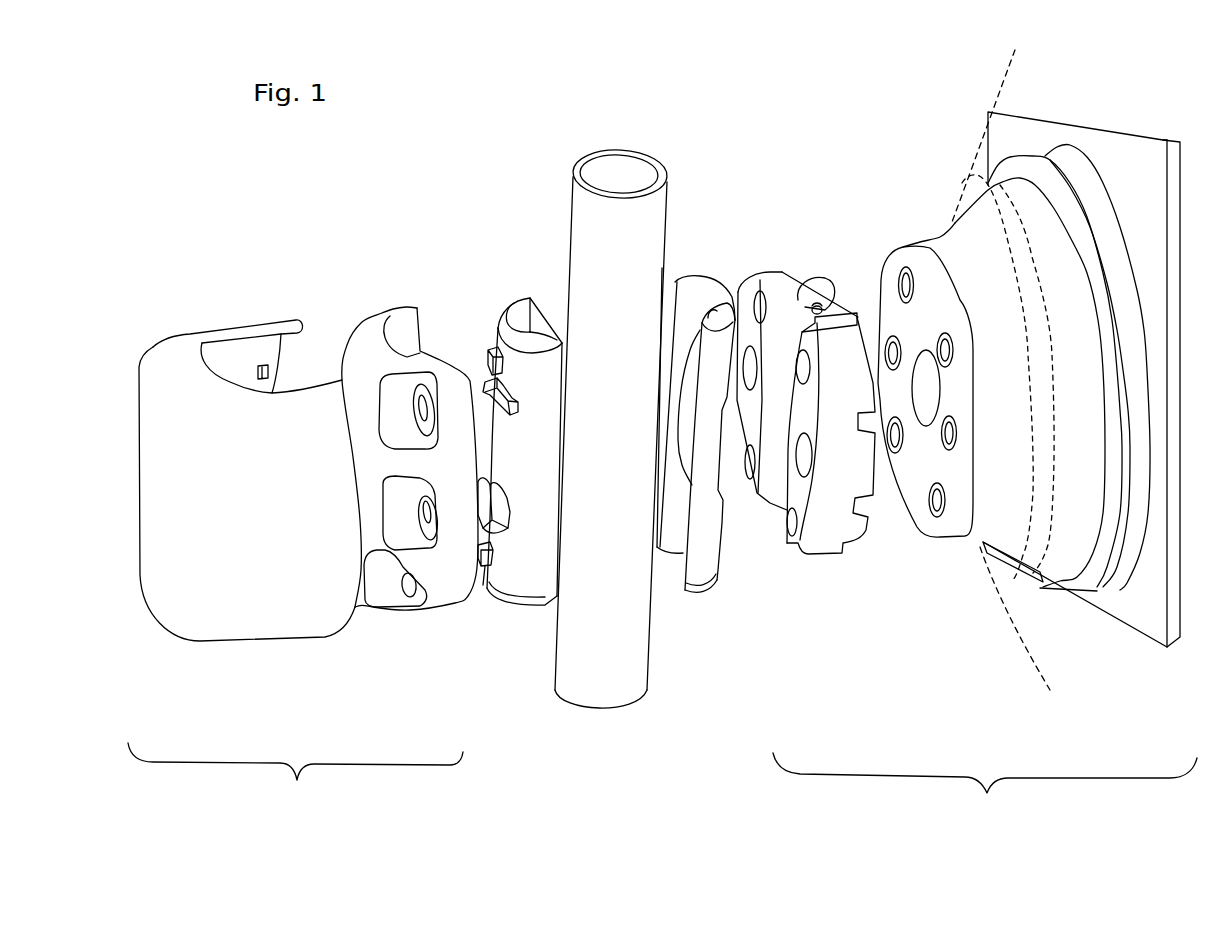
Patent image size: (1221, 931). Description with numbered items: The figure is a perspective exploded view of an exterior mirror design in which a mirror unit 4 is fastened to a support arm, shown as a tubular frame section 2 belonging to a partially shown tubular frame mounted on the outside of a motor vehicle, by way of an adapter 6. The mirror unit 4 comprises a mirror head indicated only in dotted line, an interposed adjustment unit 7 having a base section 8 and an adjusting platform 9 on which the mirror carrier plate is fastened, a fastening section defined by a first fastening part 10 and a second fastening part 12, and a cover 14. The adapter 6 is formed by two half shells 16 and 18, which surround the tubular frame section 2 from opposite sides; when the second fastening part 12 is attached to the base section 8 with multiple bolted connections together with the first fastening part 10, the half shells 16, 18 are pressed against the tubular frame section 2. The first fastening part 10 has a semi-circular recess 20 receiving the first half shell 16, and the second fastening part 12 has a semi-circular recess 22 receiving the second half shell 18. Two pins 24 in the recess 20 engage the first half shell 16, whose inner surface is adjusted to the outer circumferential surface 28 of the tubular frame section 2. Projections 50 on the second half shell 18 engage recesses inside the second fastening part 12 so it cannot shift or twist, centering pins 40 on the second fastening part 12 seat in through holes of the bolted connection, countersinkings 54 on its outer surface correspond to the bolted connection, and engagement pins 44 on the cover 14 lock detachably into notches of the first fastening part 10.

The tubular frame section 2 is at (611, 453).
The mirror unit 4 is at (662, 789).
The adapter 6 is at (608, 496).
The adjustment unit 7 is at (930, 141).
The base section 8 is at (977, 517).
The adjusting platform 9 is at (1143, 602).
The first fastening part 10 is at (806, 351).
The second fastening part 12 is at (410, 441).
The cover 14 is at (209, 298).
The first half shell 16 is at (703, 242).
The second half shell 18 is at (516, 270).
The semi-circular recess 20 is at (780, 270).
The semi-circular recess 22 is at (427, 360).
The pins 24 is at (805, 290).
The outer circumferential surface 28 is at (603, 337).
The centering pins 40 is at (483, 582).
The engagement pins 44 is at (270, 369).
The projections 50 is at (485, 343).
The countersinkings 54 is at (403, 517).